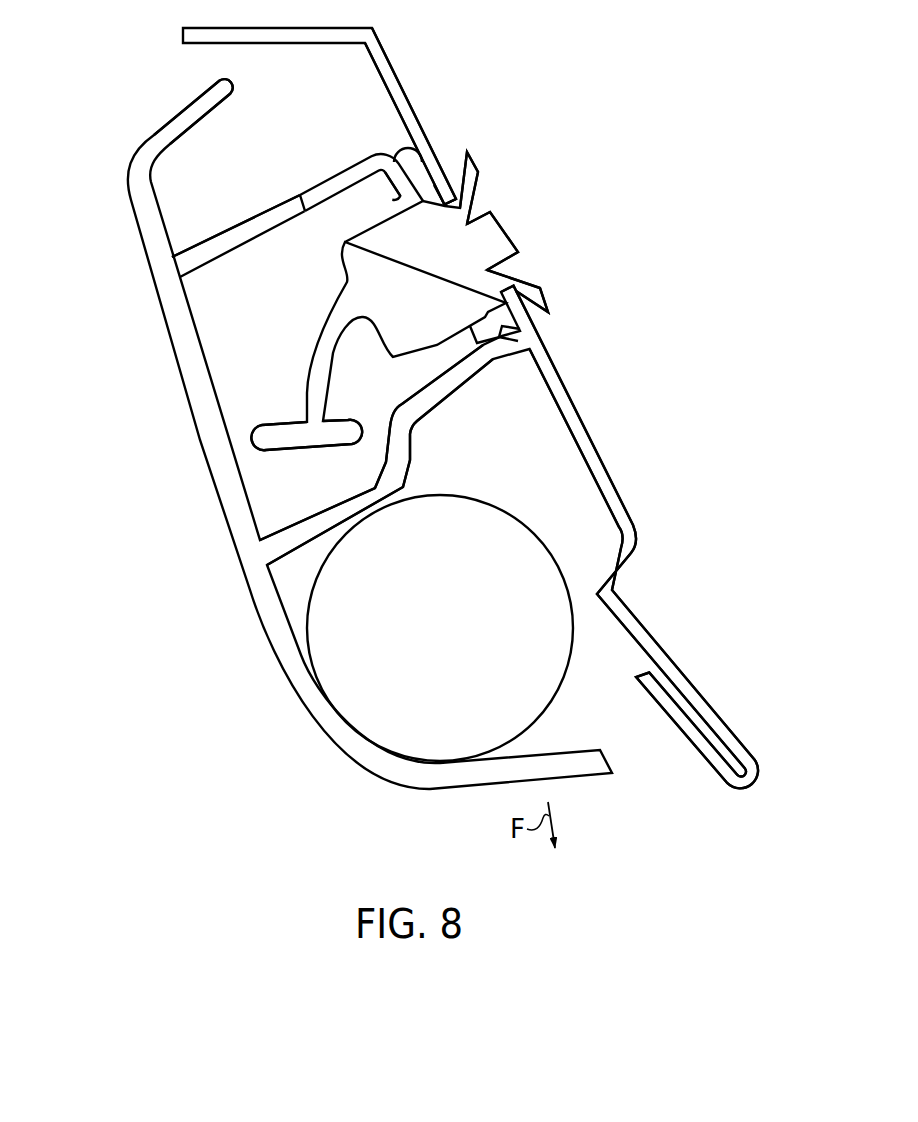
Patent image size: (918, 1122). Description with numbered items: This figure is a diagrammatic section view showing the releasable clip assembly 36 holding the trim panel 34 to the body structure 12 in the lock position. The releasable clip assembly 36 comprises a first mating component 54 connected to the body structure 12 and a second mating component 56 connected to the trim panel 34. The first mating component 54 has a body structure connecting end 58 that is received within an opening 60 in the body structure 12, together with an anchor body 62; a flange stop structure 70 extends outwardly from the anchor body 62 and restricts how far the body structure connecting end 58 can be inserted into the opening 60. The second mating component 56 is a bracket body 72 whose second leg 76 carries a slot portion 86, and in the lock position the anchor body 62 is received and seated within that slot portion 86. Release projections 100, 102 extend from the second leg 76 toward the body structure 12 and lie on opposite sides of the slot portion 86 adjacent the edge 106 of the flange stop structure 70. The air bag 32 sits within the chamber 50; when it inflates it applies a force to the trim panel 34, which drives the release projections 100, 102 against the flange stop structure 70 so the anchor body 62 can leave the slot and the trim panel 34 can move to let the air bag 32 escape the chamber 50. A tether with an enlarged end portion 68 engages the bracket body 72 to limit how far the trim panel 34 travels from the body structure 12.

The body structure 12 is at (620, 453).
The air bag 32 is at (560, 680).
The trim panel 34 is at (148, 362).
The releasable clip assembly 36 is at (207, 190).
The chamber 50 is at (281, 577).
The first mating component 54 is at (455, 164).
The second mating component 56 is at (336, 231).
The body structure connecting end 58 is at (505, 230).
The opening 60 is at (545, 323).
The anchor body 62 is at (390, 354).
The enlarged end portion 68 is at (276, 426).
The flange stop structure 70 is at (499, 333).
The bracket body 72 is at (281, 183).
The second leg 76 is at (403, 197).
The slot portion 86 is at (353, 167).
The release projection 100 is at (407, 140).
The release projection 102 is at (439, 110).
The edge 106 is at (432, 163).